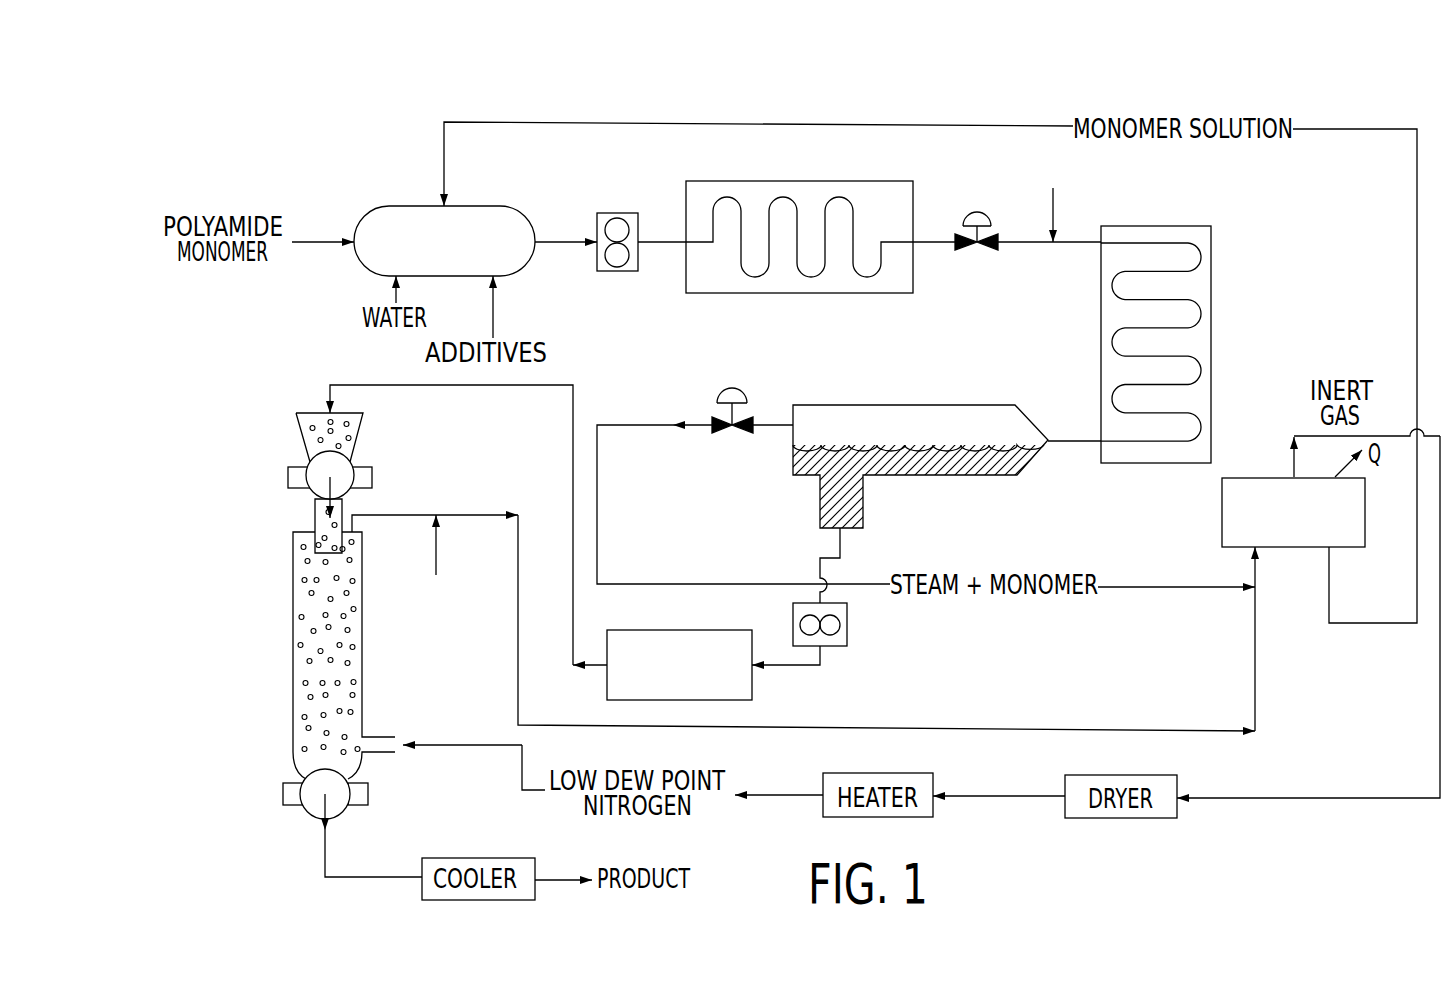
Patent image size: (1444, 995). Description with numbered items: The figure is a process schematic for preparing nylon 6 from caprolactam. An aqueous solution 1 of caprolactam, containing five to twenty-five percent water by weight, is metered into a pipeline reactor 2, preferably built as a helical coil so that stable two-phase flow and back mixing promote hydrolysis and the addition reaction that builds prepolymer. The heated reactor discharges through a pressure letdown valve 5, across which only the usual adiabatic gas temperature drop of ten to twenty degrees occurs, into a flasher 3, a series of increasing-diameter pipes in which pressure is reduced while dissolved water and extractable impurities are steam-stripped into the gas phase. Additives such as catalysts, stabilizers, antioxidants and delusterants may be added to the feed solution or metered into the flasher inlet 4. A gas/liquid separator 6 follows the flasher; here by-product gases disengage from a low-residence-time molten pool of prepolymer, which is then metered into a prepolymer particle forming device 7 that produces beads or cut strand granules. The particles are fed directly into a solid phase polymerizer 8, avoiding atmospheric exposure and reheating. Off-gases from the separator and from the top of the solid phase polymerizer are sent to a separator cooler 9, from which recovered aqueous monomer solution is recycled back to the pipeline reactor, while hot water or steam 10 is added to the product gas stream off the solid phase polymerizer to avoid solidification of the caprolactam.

The aqueous solution of caprolactam 1 is at (421, 205).
The pipeline reactor 2 is at (713, 181).
The flasher 3 is at (1212, 272).
The flasher inlet 4 is at (1052, 209).
The pressure letdown valve 5 is at (986, 252).
The gas/liquid separator 6 is at (905, 405).
The prepolymer particle forming device 7 is at (660, 630).
The solid phase polymerizer 8 is at (292, 571).
The separator cooler 9 is at (1222, 510).
The hot water or steam 10 is at (937, 726).